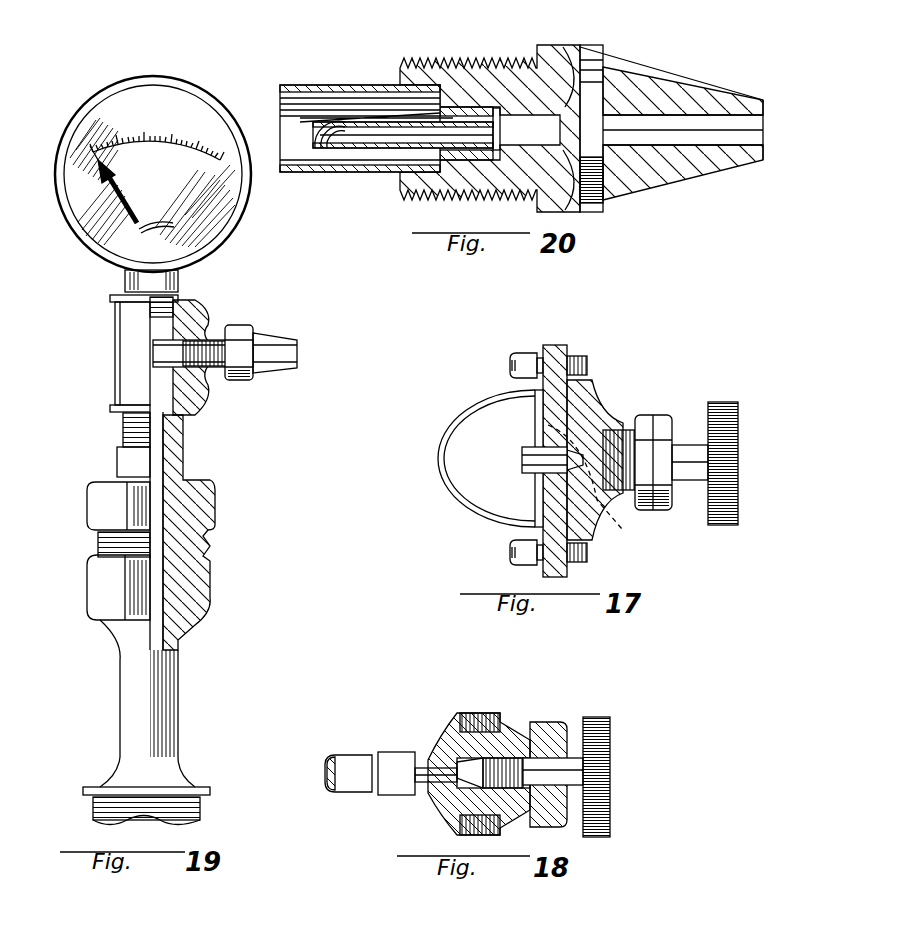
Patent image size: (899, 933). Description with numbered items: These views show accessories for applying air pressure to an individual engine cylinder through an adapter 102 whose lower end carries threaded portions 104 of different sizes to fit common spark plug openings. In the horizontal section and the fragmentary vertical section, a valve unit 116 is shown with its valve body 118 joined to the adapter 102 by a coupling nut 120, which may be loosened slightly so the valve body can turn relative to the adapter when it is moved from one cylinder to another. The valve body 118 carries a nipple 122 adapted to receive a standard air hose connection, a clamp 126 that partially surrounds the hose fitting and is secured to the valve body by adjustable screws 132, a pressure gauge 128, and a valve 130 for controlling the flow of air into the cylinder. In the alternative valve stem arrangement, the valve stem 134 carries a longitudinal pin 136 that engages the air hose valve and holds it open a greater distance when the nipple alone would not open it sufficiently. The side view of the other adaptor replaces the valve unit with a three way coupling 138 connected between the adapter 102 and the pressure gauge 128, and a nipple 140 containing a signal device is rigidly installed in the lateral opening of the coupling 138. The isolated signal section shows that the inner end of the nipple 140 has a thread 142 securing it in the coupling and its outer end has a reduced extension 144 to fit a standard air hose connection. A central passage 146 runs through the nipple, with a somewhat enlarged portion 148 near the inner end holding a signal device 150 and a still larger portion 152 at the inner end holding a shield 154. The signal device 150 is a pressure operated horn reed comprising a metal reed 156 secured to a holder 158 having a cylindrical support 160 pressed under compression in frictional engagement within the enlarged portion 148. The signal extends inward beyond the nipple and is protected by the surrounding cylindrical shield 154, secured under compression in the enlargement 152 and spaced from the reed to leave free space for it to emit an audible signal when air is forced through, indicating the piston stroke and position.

In FIG. 19, the adapter 102 is at (172, 710).
In FIG. 19, the threaded portions 104 is at (95, 812).
In FIG. 17, the valve unit 116 is at (600, 398).
In FIG. 18, the valve body 118 is at (455, 825).
In FIG. 17, the coupling nut 120 is at (601, 483).
In FIG. 17, the nipple 122 is at (522, 462).
In FIG. 18, the nipple 122 is at (415, 796).
In FIG. 17, the clamp 126 is at (470, 408).
In FIG. 18, the clamp 126 is at (336, 755).
In FIG. 19, the pressure gauge 128 is at (222, 243).
In FIG. 17, the valve 130 is at (677, 430).
In FIG. 18, the valve 130 is at (610, 765).
In FIG. 17, the screws 132 is at (512, 552).
In FIG. 18, the valve stem 134 is at (572, 758).
In FIG. 18, the longitudinal pin 136 is at (428, 758).
In FIG. 19, the three way coupling 138 is at (120, 352).
In FIG. 20, the nipple 140 is at (580, 72).
In FIG. 19, the nipple 140 is at (260, 333).
In FIG. 20, the thread 142 is at (500, 60).
In FIG. 19, the thread 142 is at (222, 380).
In FIG. 20, the reduced extension 144 is at (700, 93).
In FIG. 19, the reduced extension 144 is at (282, 375).
In FIG. 20, the central passage 146 is at (704, 136).
In FIG. 20, the enlarged portion 148 is at (473, 155).
In FIG. 20, the signal device 150 is at (410, 135).
In FIG. 20, the larger portion 152 is at (421, 78).
In FIG. 20, the shield 154 is at (293, 85).
In FIG. 19, the shield 154 is at (153, 372).
In FIG. 20, the metal reed 156 is at (327, 117).
In FIG. 20, the holder 158 is at (346, 150).
In FIG. 20, the cylindrical support 160 is at (458, 110).